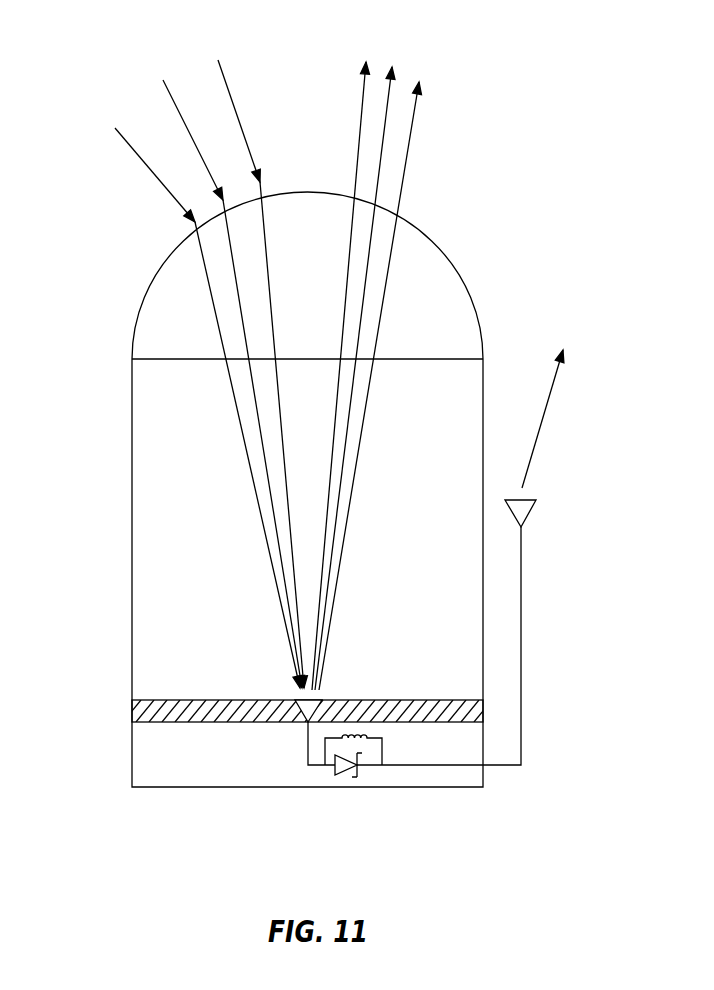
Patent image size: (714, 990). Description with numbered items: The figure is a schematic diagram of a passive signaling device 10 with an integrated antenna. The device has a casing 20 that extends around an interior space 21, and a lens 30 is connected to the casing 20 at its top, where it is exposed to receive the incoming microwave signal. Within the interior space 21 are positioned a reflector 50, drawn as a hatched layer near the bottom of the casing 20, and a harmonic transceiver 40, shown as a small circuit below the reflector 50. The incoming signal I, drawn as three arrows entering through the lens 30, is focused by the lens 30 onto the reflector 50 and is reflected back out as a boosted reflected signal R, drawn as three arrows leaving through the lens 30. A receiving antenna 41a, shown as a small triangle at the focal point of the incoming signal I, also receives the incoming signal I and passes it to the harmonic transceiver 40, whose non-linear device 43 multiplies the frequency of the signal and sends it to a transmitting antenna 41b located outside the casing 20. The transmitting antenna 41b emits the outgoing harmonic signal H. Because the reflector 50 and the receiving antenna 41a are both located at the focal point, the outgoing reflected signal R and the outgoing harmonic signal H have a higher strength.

The signaling device 10 is at (319, 435).
The casing 20 is at (131, 598).
The interior space 21 is at (182, 556).
The lens 30 is at (458, 280).
The reflector 50 is at (155, 710).
The receiving antenna 41a is at (299, 712).
The harmonic transceiver 40 is at (293, 742).
The non-linear device 43 is at (358, 767).
The transmitting antenna 41b is at (528, 515).
The outgoing harmonic signal H is at (540, 428).
The incoming signal I is at (223, 78).
The reflected signal R is at (386, 351).